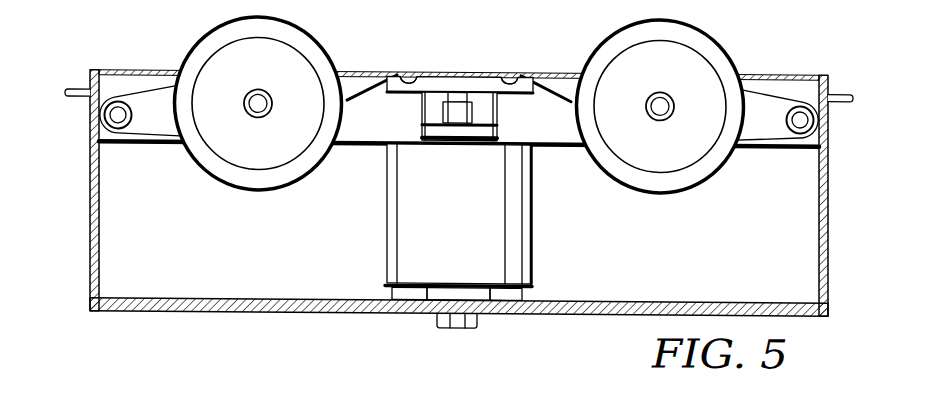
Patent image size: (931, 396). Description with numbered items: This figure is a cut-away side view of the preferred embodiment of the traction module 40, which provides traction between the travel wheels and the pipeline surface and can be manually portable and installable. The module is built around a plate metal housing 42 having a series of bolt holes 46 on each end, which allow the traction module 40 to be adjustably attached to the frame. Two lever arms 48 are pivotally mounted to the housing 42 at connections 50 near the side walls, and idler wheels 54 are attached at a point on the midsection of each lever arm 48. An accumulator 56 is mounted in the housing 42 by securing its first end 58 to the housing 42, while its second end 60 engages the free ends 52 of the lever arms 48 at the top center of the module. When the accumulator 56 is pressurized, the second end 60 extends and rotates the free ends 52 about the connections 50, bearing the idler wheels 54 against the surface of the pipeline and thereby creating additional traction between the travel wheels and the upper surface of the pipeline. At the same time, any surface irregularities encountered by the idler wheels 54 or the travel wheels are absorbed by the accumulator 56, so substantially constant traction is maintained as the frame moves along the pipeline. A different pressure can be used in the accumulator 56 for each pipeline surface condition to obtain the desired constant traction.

The traction module 40 is at (567, 328).
The plate metal housing 42 is at (130, 311).
The bolt holes 46 is at (90, 152).
The lever arms 48 is at (152, 84).
The connections 50 is at (118, 121).
The free ends 52 is at (402, 69).
The idler wheels 54 is at (208, 173).
The accumulator 56 is at (532, 204).
The first end 58 is at (530, 283).
The second end 60 is at (460, 74).